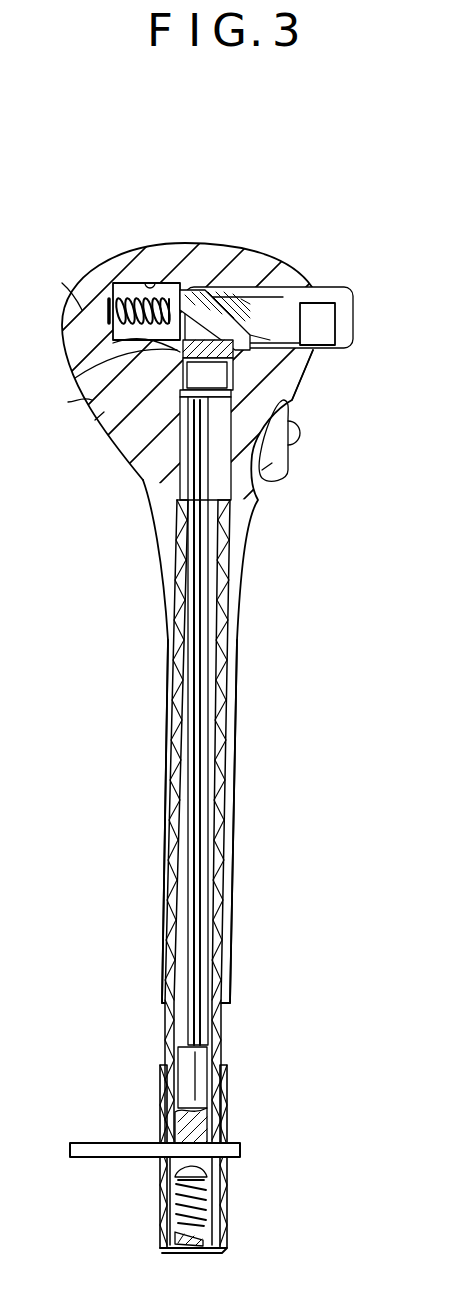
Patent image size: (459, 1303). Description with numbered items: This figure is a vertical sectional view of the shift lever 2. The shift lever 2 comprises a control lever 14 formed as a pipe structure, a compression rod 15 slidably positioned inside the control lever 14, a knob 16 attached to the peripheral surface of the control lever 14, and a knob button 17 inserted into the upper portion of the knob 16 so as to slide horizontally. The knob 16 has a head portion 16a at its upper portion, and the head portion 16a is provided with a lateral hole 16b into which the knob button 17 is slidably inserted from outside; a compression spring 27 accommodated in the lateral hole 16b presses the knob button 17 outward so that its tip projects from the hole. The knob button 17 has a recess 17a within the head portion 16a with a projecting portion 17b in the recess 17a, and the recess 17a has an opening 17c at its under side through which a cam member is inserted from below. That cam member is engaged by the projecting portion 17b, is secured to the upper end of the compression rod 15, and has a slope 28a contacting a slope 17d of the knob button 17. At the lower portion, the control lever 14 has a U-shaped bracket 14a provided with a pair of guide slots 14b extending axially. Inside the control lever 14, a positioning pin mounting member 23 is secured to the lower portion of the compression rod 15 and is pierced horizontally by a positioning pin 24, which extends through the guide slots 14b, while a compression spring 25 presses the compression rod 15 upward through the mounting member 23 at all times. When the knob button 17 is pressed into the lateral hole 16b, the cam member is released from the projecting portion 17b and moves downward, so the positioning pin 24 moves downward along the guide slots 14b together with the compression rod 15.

The shift lever 2 is at (238, 760).
The control lever 14 is at (224, 1023).
The bracket 14a is at (228, 1090).
The guide slots 14b is at (160, 1198).
The compression rod 15 is at (202, 900).
The knob 16 is at (114, 447).
The head portion 16a is at (51, 282).
The lateral hole 16b is at (152, 286).
The knob button 17 is at (340, 290).
The recess 17a is at (207, 300).
The projecting portion 17b is at (177, 351).
The opening 17c is at (106, 426).
The slope 17d is at (303, 367).
The positioning pin mounting member 23 is at (181, 1078).
The positioning pin 24 is at (85, 1143).
The compression spring 25 is at (203, 1250).
The compression spring 27 is at (113, 278).
The slope 28a is at (245, 300).